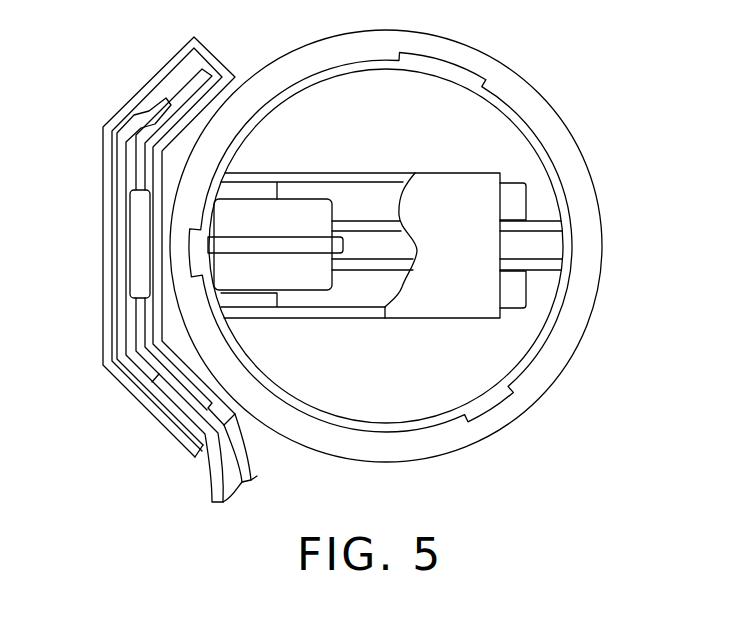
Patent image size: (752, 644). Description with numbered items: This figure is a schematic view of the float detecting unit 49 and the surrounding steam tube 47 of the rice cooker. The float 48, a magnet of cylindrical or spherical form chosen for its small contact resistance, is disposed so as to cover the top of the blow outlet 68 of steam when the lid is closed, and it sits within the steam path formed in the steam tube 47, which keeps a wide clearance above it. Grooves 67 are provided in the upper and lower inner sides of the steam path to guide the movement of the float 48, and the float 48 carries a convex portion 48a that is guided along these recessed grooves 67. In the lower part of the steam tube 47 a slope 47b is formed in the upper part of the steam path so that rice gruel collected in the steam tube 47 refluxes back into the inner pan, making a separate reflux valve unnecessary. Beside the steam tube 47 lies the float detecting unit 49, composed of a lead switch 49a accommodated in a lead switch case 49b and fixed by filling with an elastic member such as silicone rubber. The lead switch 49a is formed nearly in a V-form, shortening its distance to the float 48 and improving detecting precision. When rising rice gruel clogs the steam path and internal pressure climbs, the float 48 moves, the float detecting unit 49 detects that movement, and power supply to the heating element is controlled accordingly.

The steam tube 47 is at (425, 445).
The slope 47b is at (408, 107).
The float 48 is at (297, 215).
The convex portion 48a is at (340, 242).
The float detecting unit 49 is at (135, 393).
The lead switch 49a is at (140, 240).
The lead switch case 49b is at (108, 306).
The grooves 67 is at (547, 250).
The blow outlet 68 is at (248, 190).